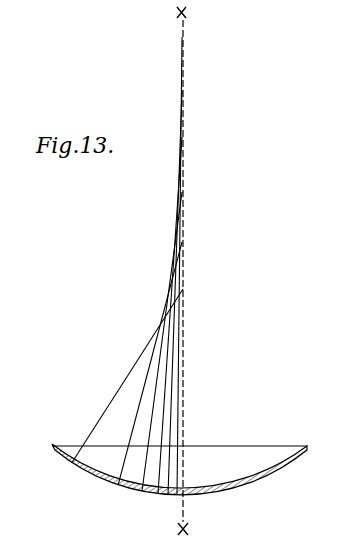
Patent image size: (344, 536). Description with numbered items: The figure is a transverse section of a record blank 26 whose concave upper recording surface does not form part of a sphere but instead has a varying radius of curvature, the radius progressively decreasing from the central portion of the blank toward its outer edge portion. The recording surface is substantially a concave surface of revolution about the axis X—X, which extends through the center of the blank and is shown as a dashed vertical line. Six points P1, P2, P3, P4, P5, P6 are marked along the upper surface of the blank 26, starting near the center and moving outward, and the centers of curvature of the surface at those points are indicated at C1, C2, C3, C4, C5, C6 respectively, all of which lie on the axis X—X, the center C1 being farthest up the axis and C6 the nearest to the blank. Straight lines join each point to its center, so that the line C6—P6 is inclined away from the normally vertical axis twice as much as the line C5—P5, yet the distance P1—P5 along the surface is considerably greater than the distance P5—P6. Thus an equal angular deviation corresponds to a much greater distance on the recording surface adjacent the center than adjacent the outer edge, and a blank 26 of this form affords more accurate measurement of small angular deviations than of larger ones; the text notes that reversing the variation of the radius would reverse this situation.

The record blank 26 is at (268, 477).
The center of curvature C1 is at (190, 148).
The center of curvature C2 is at (188, 187).
The center of curvature C3 is at (185, 223).
The center of curvature C4 is at (181, 263).
The center of curvature C5 is at (175, 300).
The center of curvature C6 is at (164, 330).
The point on recording surface P1 is at (180, 390).
The point on recording surface P2 is at (168, 403).
The point on recording surface P3 is at (159, 415).
The point on recording surface P4 is at (146, 427).
The point on recording surface P5 is at (128, 433).
The point on recording surface P6 is at (93, 430).